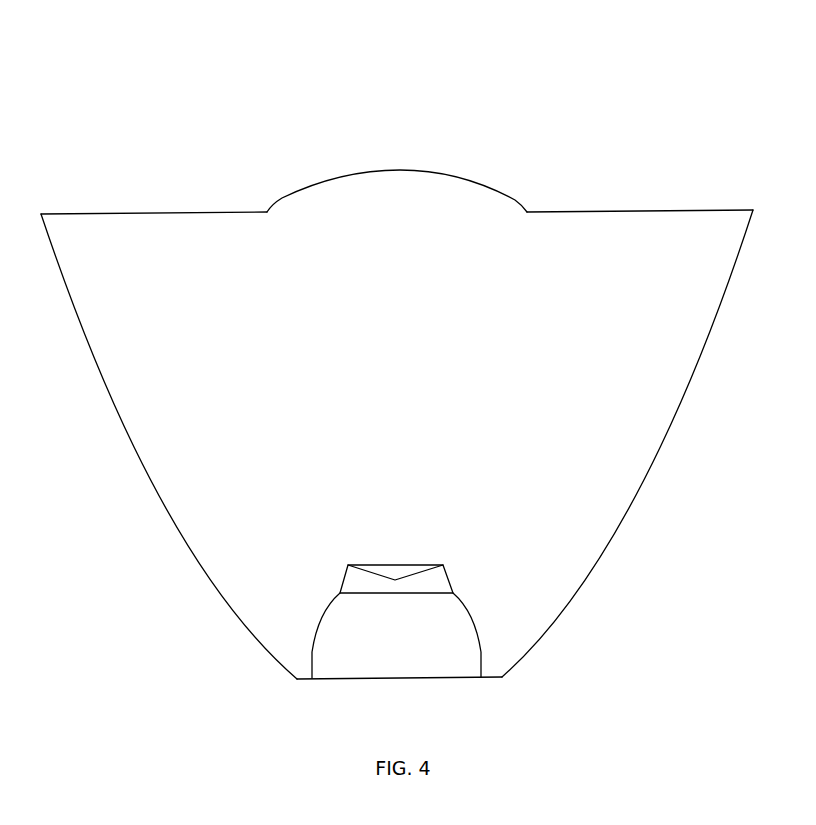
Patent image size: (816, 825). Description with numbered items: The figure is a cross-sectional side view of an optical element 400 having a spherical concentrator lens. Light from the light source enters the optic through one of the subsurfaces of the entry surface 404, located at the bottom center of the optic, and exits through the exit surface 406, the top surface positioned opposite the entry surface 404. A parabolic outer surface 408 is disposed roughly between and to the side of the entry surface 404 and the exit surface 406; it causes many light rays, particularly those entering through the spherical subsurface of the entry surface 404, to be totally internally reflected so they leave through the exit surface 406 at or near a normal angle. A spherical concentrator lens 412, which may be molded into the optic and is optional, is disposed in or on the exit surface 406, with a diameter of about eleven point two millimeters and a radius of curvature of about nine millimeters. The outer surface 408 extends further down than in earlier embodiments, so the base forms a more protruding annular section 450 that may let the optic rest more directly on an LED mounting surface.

The optical element 400 is at (397, 359).
The entry surface 404 is at (403, 535).
The exit surface 406 is at (184, 212).
The parabolic outer surface 408 is at (157, 485).
The spherical concentrator lens 412 is at (423, 171).
The protruding annular section 450 is at (502, 677).